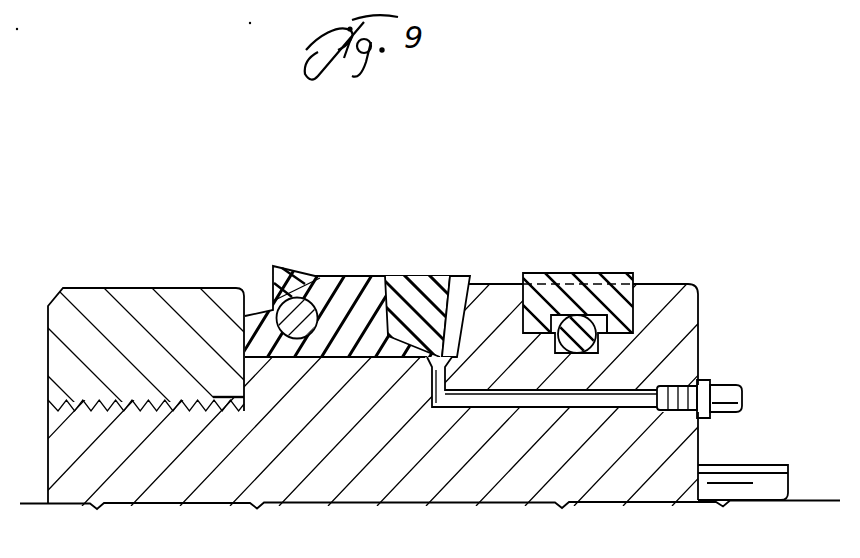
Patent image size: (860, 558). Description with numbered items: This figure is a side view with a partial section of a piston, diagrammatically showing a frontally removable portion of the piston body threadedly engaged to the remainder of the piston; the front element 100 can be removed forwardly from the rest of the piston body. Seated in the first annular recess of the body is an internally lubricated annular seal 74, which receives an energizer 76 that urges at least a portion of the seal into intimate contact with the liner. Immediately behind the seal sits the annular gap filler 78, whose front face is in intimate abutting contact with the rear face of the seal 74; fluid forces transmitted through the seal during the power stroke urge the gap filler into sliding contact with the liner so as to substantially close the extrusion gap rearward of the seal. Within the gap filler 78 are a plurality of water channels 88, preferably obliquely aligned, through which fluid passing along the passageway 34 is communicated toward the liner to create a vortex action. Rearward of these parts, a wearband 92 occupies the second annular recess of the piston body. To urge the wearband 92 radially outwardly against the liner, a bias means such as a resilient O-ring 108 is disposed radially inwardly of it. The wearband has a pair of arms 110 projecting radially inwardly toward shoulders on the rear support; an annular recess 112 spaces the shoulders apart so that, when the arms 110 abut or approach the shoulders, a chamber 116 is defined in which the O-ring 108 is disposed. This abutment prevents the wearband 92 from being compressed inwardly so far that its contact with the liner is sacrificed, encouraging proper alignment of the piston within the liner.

The passageway 34 is at (626, 400).
The annular seal 74 is at (330, 275).
The energizer 76 is at (270, 298).
The annular gap filler 78 is at (408, 277).
The water channels 88 is at (460, 275).
The wearband 92 is at (533, 275).
The front element 100 is at (118, 288).
The resilient O-ring 108 is at (570, 316).
The arms 110 is at (615, 320).
The annular recess 112 is at (598, 346).
The chamber 116 is at (588, 305).